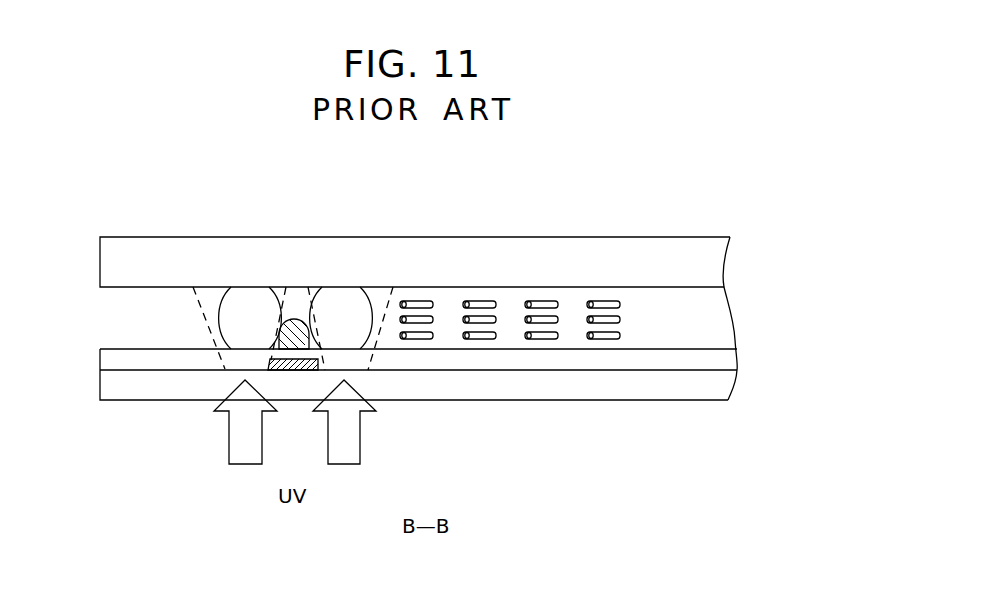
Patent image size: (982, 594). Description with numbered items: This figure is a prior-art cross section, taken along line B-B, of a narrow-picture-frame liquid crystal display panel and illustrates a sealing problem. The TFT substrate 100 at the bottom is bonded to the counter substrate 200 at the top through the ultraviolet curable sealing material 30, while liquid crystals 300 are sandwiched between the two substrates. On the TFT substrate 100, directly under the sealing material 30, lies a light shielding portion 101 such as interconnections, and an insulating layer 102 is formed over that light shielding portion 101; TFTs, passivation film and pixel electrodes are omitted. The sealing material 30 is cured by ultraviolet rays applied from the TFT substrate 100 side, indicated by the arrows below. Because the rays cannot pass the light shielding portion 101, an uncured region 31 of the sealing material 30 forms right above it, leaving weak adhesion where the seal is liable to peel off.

The ultraviolet curable sealing material 30 is at (328, 297).
The uncured region 31 is at (283, 327).
The TFT substrate 100 is at (712, 382).
The light shielding portion 101 is at (318, 362).
The insulating layer 102 is at (658, 360).
The counter substrate 200 is at (698, 252).
The liquid crystals 300 is at (620, 300).